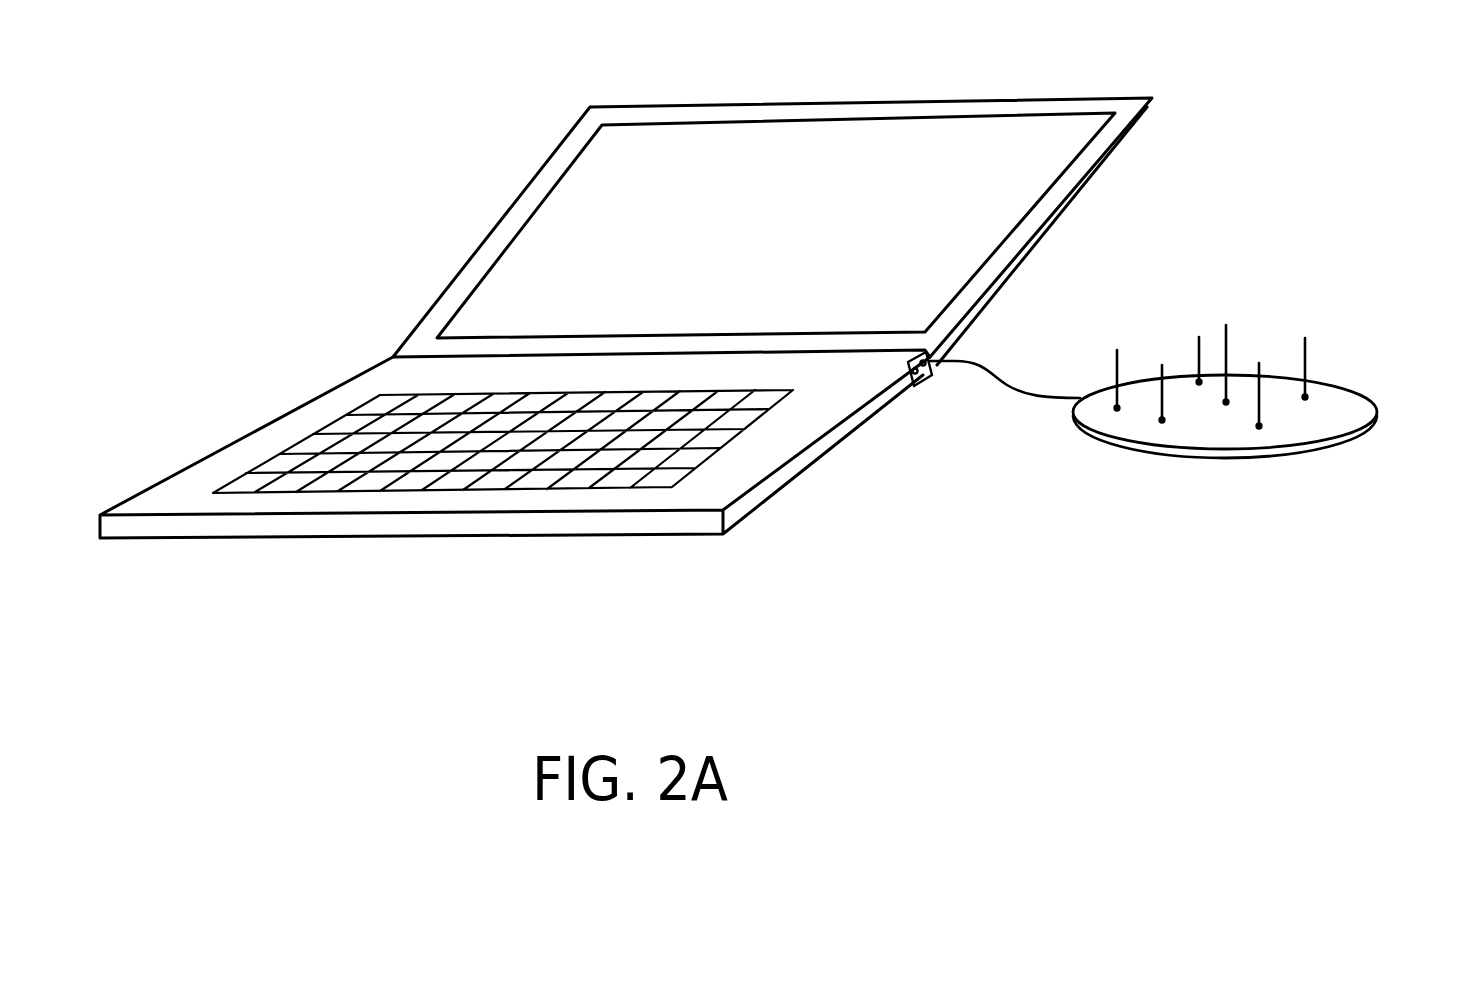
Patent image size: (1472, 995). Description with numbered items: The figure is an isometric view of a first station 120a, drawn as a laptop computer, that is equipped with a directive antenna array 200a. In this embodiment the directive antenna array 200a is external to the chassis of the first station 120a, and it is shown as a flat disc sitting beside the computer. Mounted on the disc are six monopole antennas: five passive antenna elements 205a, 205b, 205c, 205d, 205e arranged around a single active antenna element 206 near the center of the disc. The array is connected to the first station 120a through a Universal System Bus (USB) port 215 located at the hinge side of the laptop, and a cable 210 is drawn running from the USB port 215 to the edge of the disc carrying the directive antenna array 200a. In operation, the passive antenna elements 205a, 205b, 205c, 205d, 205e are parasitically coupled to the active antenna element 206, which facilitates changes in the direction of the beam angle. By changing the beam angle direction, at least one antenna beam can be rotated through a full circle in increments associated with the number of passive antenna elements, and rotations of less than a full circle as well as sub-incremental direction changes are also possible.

The first station 120a is at (1000, 100).
The directive antenna array 200a is at (1244, 438).
The passive antenna element 205a is at (1116, 366).
The passive antenna element 205b is at (1198, 366).
The passive antenna element 205c is at (1303, 347).
The passive antenna element 205d is at (1261, 427).
The passive antenna element 205e is at (1162, 427).
The active antenna element 206 is at (1225, 345).
The cable 210 is at (1020, 393).
The Universal System Bus (USB) port 215 is at (918, 386).